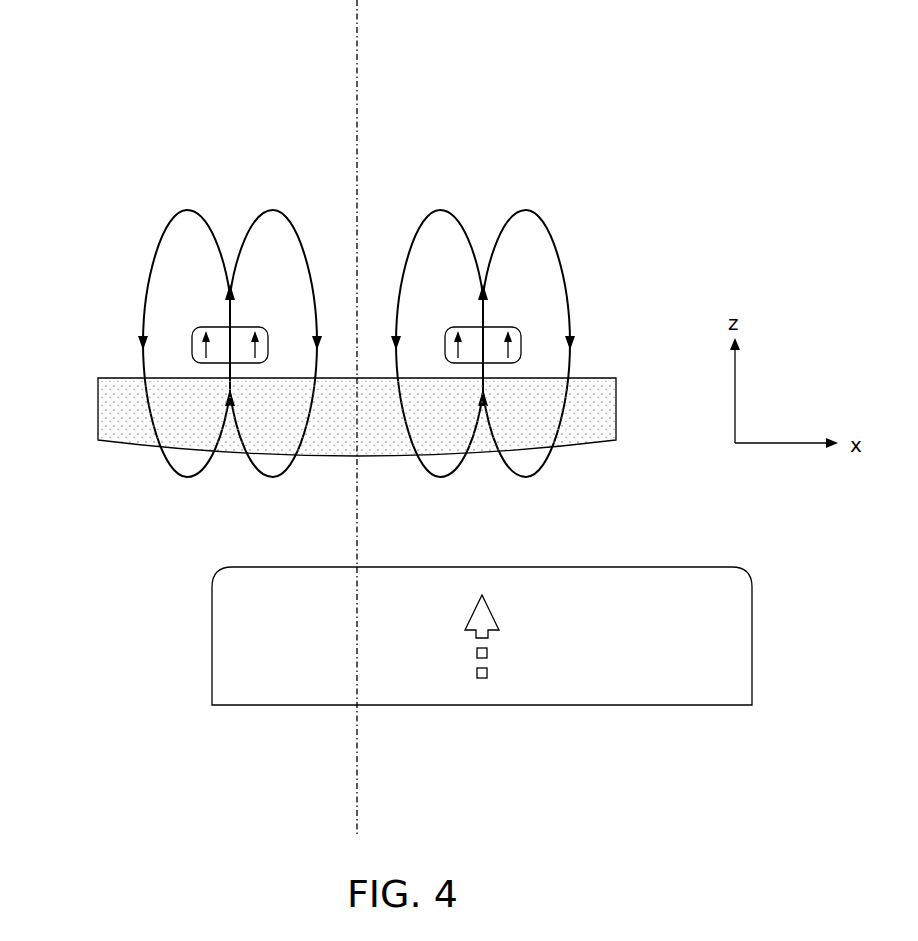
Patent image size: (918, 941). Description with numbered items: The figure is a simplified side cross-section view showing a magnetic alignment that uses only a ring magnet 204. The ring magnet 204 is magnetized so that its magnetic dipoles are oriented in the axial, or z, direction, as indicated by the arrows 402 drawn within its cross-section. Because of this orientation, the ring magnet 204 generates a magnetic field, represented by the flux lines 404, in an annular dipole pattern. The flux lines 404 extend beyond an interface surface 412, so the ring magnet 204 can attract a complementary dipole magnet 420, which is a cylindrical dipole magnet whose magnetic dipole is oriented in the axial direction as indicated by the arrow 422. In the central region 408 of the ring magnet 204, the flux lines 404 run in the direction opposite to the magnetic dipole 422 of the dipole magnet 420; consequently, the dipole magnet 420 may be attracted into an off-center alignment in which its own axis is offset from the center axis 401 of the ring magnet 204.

The center axis 401 is at (355, 37).
The arrows 402 is at (195, 342).
The ring magnet 204 is at (213, 327).
The flux lines 404 is at (187, 210).
The central region 408 is at (327, 206).
The interface surface 412 is at (97, 410).
The dipole magnet 420 is at (213, 625).
The arrow 422 is at (476, 653).